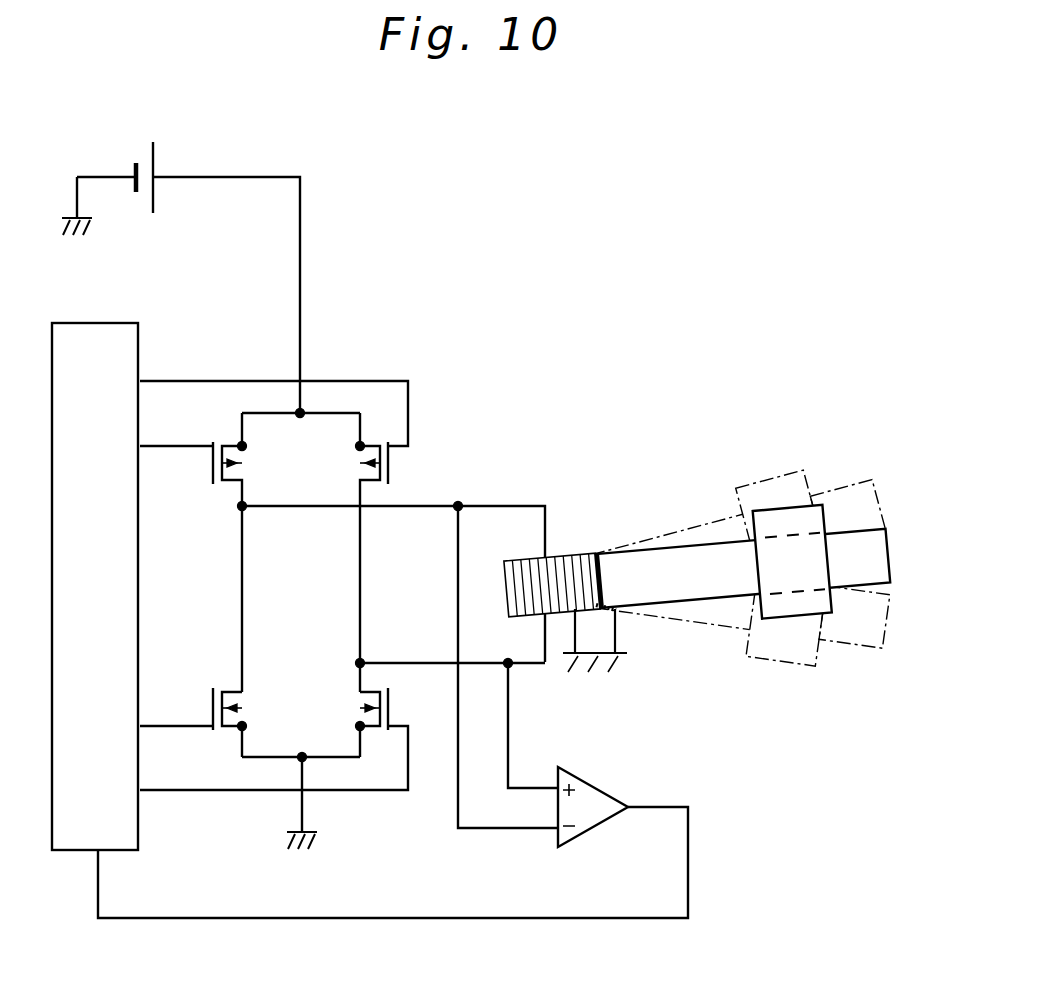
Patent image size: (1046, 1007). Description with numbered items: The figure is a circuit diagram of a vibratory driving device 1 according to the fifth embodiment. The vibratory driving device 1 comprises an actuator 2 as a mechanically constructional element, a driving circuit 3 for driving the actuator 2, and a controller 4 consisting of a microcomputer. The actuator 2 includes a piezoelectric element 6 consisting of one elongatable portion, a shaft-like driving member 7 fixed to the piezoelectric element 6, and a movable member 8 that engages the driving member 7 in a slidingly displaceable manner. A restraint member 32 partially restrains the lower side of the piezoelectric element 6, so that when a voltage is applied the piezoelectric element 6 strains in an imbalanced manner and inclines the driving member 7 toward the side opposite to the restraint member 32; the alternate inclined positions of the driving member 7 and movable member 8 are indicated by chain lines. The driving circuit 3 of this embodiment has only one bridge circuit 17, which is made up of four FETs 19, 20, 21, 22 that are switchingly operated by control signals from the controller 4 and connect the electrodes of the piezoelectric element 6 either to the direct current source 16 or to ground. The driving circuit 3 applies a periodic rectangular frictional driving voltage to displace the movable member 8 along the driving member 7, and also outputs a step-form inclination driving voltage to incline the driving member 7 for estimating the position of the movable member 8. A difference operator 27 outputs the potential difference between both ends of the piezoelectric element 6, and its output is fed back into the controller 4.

The vibratory driving device 1 is at (596, 208).
The actuator 2 is at (697, 526).
The driving circuit 3 is at (342, 516).
The controller 4 is at (72, 323).
The piezoelectric element 6 is at (557, 549).
The driving member 7 is at (725, 598).
The movable member 8 is at (785, 507).
The direct current source 16 is at (137, 162).
The bridge circuit 17 is at (342, 563).
The FET 19 is at (240, 463).
The FET 20 is at (363, 463).
The FET 21 is at (366, 708).
The FET 22 is at (238, 708).
The difference operator 27 is at (597, 787).
The restraint member 32 is at (617, 632).